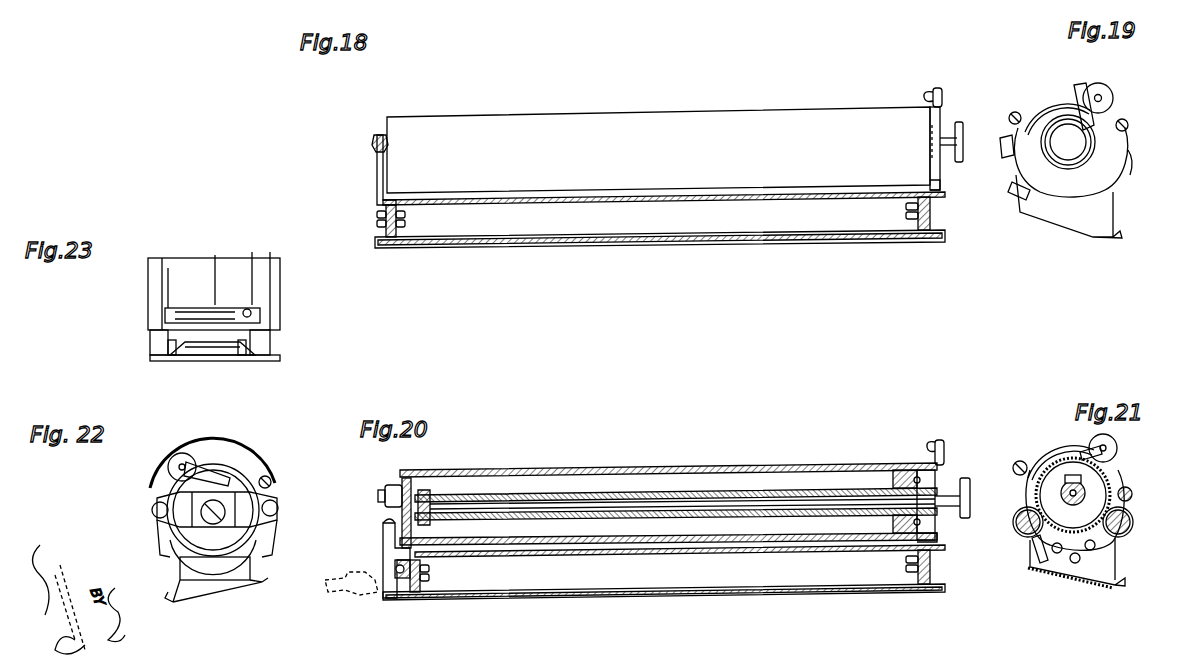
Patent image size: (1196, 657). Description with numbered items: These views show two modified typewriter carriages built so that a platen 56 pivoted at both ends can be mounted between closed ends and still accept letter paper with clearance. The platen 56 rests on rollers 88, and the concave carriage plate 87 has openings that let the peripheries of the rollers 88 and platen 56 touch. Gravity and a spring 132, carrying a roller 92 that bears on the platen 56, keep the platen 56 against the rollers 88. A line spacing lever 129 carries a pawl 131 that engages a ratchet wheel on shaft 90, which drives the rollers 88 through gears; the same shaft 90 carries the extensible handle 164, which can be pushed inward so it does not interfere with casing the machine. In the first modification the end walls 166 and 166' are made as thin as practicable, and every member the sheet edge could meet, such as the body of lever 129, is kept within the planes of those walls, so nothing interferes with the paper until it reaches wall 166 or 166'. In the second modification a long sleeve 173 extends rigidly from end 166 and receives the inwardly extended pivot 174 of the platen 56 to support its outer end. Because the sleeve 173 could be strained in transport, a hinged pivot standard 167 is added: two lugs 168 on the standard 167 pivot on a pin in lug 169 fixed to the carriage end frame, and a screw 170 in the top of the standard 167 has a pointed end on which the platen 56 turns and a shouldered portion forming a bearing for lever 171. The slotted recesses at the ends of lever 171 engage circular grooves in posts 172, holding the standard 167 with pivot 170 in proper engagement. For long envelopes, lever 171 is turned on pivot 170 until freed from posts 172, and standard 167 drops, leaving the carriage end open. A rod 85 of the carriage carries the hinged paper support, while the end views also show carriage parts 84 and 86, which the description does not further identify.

In FIG. 18, the platen 56 is at (658, 150).
In FIG. 19, the platen 56 is at (1108, 128).
In FIG. 23, the platen 56 is at (214, 291).
In FIG. 22, the platen 56 is at (175, 500).
In FIG. 20, the platen 56 is at (522, 468).
In FIG. 21, the platen 56 is at (1110, 478).
In FIG. 18, the concave carriage plate 87 is at (700, 200).
In FIG. 22, the concave carriage plate 87 is at (157, 530).
In FIG. 20, the concave carriage plate 87 is at (790, 549).
In FIG. 19, the rollers 88 is at (1012, 186).
In FIG. 21, the rollers 88 is at (1134, 522).
In FIG. 18, the shaft 90 is at (963, 160).
In FIG. 20, the shaft 90 is at (968, 514).
In FIG. 19, the roller 92 is at (1106, 88).
In FIG. 23, the roller 92 is at (165, 312).
In FIG. 22, the roller 92 is at (168, 464).
In FIG. 21, the roller 92 is at (1113, 446).
In FIG. 18, the line spacing lever 129 is at (930, 90).
In FIG. 19, the line spacing lever 129 is at (1078, 90).
In FIG. 20, the line spacing lever 129 is at (934, 440).
In FIG. 20, the pawl 131 is at (905, 466).
In FIG. 19, the spring 132 is at (1050, 102).
In FIG. 21, the spring 132 is at (1058, 456).
In FIG. 18, the extensible handle 164 is at (948, 130).
In FIG. 20, the extensible handle 164 is at (952, 480).
In FIG. 18, the end wall of carriage 166 is at (953, 155).
In FIG. 20, the end wall of carriage 166 is at (949, 510).
In FIG. 18, the end wall of carriage 166' is at (367, 170).
In FIG. 22, the hinged pivot standard 167 is at (216, 579).
In FIG. 20, the hinged pivot standard 167 is at (383, 552).
In FIG. 23, the lugs 168 is at (172, 356).
In FIG. 20, the lugs 168 is at (395, 578).
In FIG. 20, the lug 169 is at (412, 565).
In FIG. 23, the screw 170 is at (208, 358).
In FIG. 20, the screw 170 is at (385, 497).
In FIG. 23, the lever 171 is at (280, 357).
In FIG. 22, the lever 171 is at (217, 509).
In FIG. 20, the lever 171 is at (400, 485).
In FIG. 23, the posts 172 is at (150, 345).
In FIG. 22, the posts 172 is at (155, 507).
In FIG. 20, the sleeve 173 is at (672, 486).
In FIG. 20, the pivot 174 is at (440, 510).
In FIG. 21, the screw 84 is at (1022, 462).
In FIG. 21, the rod 85 is at (1133, 494).
In FIG. 21, the base strap 86 is at (1090, 584).